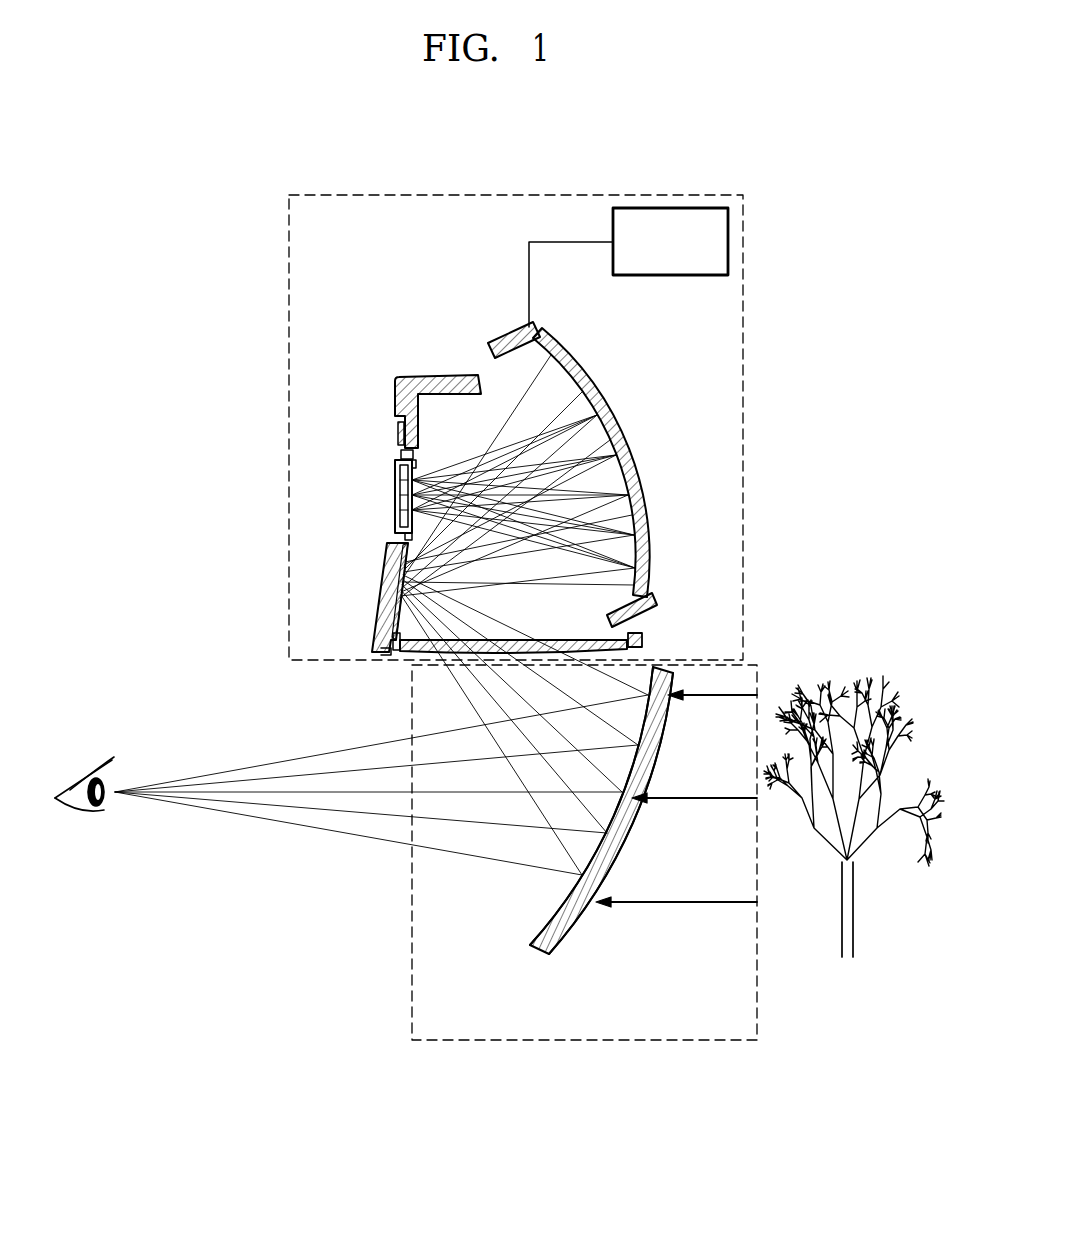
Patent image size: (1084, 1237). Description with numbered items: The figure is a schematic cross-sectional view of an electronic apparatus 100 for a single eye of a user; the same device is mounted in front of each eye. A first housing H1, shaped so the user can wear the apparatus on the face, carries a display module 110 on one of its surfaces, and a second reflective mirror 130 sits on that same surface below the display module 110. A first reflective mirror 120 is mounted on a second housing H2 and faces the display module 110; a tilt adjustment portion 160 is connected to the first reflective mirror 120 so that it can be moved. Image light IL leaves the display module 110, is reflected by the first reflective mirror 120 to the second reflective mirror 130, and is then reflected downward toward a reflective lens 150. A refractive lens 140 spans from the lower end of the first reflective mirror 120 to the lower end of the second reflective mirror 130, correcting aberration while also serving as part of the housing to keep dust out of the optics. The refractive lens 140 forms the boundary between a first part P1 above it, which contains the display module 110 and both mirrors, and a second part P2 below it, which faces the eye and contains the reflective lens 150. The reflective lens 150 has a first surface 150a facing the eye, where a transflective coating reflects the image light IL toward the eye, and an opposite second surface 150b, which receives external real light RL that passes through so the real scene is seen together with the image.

The electronic apparatus 100 is at (783, 535).
The display module 110 is at (393, 517).
The first reflective mirror 120 is at (640, 416).
The second reflective mirror 130 is at (380, 597).
The refractive lens 140 is at (436, 646).
The reflective lens 150 is at (554, 851).
The first surface 150a is at (540, 926).
The second surface 150b is at (569, 936).
The tilt adjustment portion 160 is at (676, 208).
The first housing H1 is at (400, 377).
The second housing H2 is at (500, 333).
The image light IL is at (521, 385).
The real light RL is at (676, 798).
The first part P1 is at (744, 326).
The second part P2 is at (757, 1006).